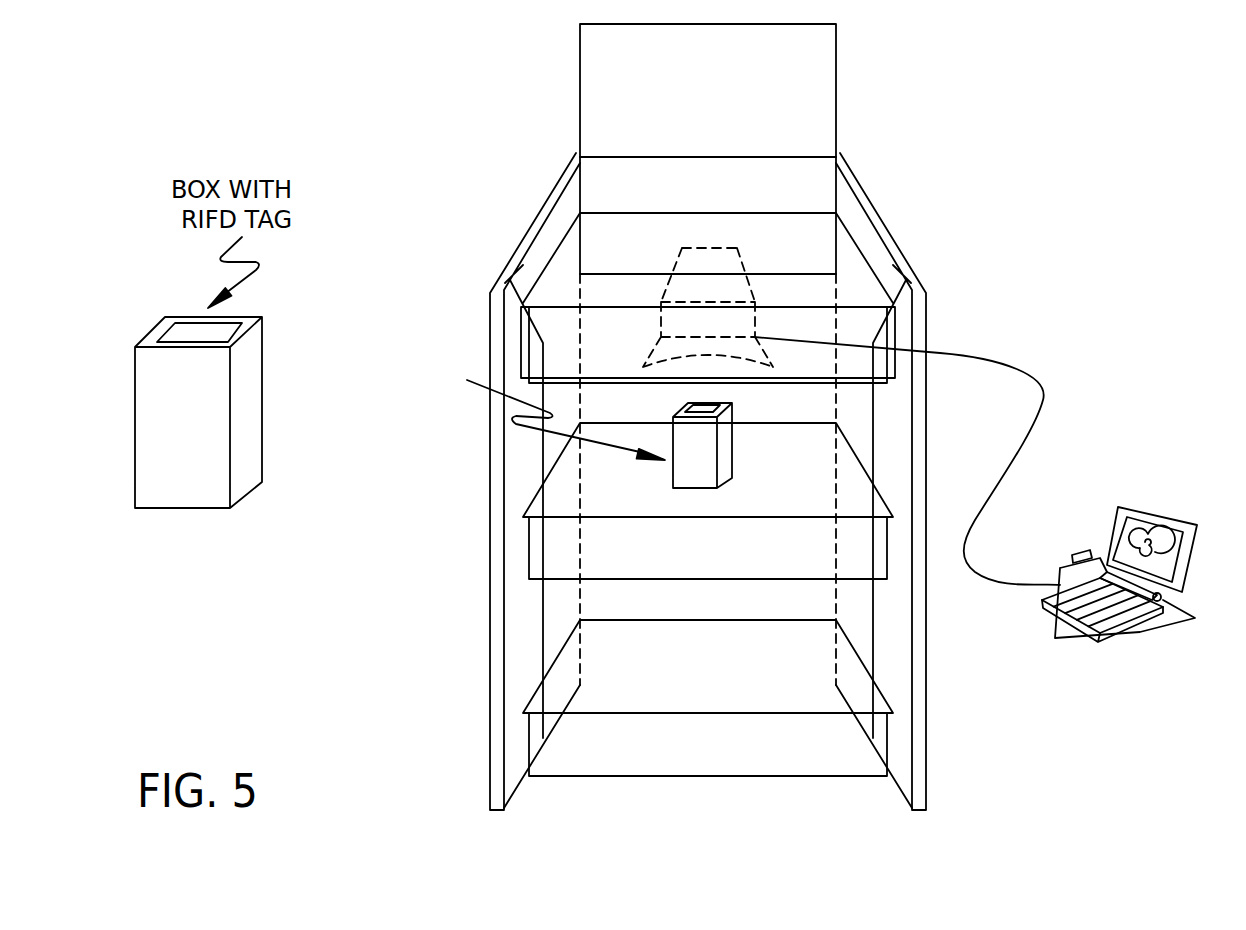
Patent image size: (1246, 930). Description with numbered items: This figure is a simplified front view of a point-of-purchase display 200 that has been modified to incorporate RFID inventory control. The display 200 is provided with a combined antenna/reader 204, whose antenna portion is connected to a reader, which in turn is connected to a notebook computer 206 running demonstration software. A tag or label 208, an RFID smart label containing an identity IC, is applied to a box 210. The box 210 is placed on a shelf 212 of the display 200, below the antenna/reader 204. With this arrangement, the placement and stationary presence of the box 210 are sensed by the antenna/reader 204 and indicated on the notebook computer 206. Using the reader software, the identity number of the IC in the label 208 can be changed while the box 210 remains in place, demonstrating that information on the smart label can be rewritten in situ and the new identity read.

The POP display 200 is at (452, 100).
The antenna/reader 204 is at (786, 326).
The notebook computer 206 is at (1053, 632).
The tag or label 208 is at (715, 408).
The box 210 is at (710, 478).
The shelf 212 is at (607, 507).